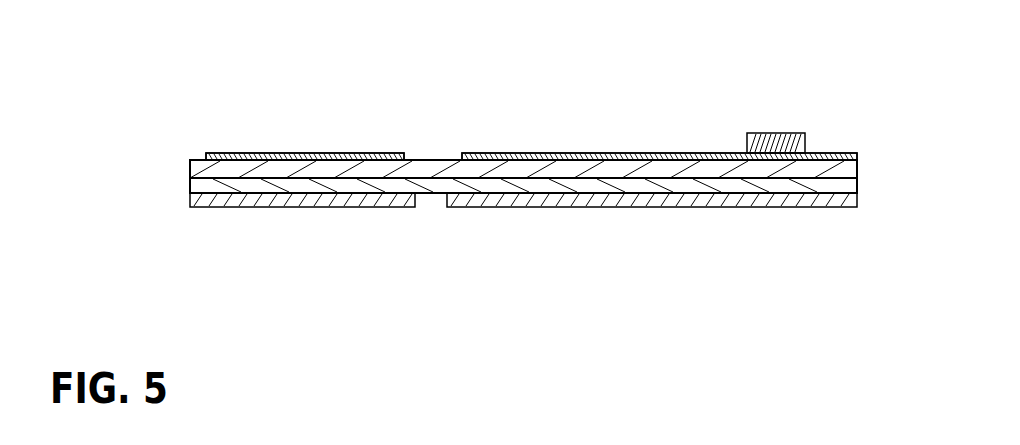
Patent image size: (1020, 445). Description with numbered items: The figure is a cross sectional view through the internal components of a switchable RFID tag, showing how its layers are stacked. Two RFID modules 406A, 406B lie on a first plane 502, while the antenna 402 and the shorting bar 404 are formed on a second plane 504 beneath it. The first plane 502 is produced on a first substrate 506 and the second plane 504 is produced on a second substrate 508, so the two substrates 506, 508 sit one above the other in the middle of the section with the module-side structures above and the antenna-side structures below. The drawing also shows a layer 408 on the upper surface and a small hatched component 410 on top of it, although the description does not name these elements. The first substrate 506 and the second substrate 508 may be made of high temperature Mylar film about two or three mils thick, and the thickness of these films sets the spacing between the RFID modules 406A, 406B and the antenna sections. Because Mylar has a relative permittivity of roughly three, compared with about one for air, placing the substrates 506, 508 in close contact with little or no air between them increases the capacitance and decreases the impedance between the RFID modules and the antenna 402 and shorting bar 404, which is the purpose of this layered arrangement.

The antenna 402 is at (270, 207).
The shorting bar 404 is at (640, 207).
The RFID module 406A is at (675, 125).
The RFID module 406B is at (248, 135).
The conductive layer 408 is at (335, 153).
The feed component 410 is at (758, 133).
The first plane 502 is at (187, 165).
The second plane 504 is at (187, 196).
The first substrate 506 is at (428, 158).
The second substrate 508 is at (428, 207).